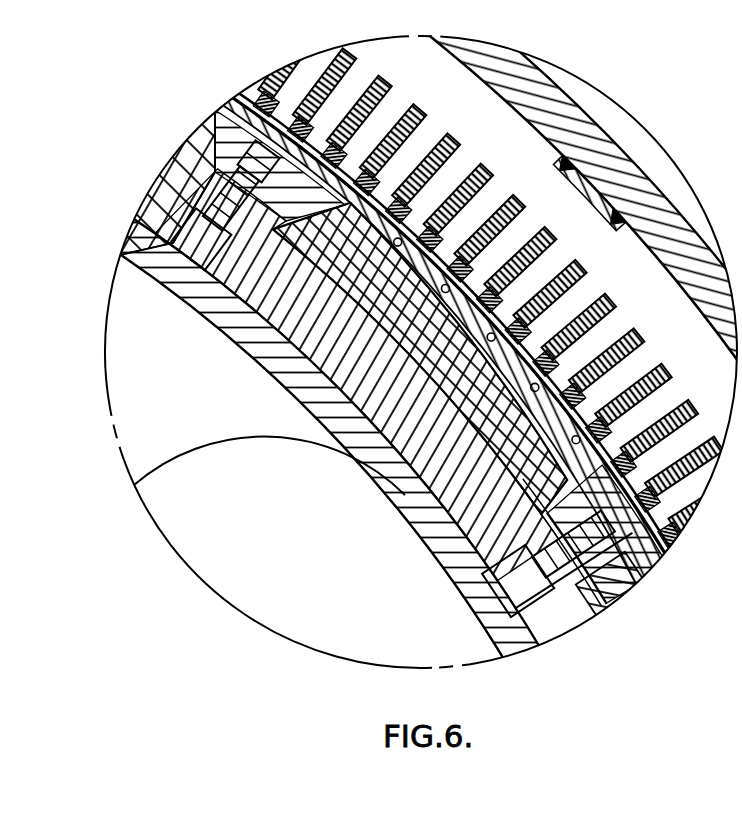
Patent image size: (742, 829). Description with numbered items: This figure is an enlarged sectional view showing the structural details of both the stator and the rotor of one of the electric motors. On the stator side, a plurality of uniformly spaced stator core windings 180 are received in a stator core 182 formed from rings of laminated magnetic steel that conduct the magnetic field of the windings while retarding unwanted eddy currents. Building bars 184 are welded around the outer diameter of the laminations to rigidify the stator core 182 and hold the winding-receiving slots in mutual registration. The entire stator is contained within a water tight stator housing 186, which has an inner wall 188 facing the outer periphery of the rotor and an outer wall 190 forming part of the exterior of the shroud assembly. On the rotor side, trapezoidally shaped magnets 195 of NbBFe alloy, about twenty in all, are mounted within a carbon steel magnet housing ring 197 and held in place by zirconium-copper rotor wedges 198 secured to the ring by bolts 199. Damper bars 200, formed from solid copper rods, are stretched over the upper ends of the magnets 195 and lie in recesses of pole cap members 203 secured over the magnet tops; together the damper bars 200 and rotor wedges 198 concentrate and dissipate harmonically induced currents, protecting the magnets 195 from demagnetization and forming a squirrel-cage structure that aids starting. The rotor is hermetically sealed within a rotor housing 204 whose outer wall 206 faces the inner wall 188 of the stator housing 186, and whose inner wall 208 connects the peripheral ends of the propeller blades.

The stator core windings 180 is at (456, 116).
The stator core 182 is at (480, 150).
The building bars 184 is at (597, 207).
The stator housing 186 is at (590, 104).
The inner wall 188 is at (645, 543).
The outer wall 190 is at (660, 197).
The magnets 195 is at (450, 373).
The magnet housing ring 197 is at (297, 320).
The rotor wedges 198 is at (214, 112).
The bolts 199 is at (212, 214).
The damper bars 200 is at (567, 363).
The pole cap members 203 is at (480, 447).
The rotor housing 204 is at (210, 331).
The outer wall 206 is at (242, 98).
The inner wall 208 is at (303, 380).